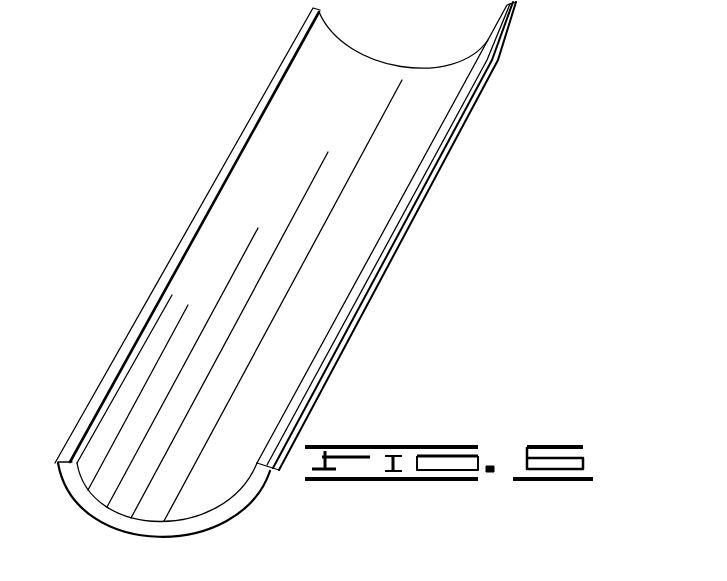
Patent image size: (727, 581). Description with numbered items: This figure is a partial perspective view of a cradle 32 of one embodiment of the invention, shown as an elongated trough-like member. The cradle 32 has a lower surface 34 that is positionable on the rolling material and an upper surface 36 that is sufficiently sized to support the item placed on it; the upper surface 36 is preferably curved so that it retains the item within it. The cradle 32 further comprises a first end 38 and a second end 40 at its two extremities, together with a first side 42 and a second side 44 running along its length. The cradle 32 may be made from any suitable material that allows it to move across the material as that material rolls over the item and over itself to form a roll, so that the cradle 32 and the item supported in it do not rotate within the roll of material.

The cradle 32 is at (286, 291).
The lower surface 34 is at (386, 236).
The upper surface 36 is at (192, 497).
The first end 38 is at (112, 515).
The second end 40 is at (383, 62).
The first side 42 is at (147, 318).
The second side 44 is at (350, 306).